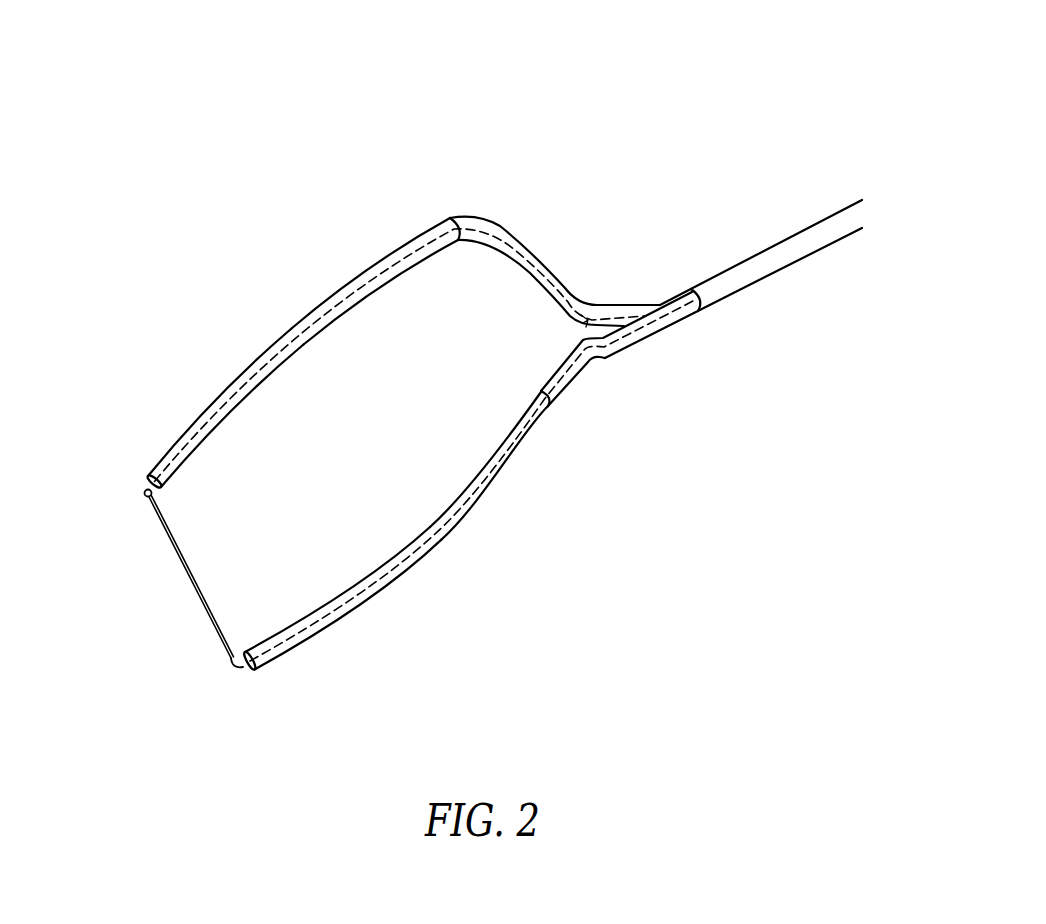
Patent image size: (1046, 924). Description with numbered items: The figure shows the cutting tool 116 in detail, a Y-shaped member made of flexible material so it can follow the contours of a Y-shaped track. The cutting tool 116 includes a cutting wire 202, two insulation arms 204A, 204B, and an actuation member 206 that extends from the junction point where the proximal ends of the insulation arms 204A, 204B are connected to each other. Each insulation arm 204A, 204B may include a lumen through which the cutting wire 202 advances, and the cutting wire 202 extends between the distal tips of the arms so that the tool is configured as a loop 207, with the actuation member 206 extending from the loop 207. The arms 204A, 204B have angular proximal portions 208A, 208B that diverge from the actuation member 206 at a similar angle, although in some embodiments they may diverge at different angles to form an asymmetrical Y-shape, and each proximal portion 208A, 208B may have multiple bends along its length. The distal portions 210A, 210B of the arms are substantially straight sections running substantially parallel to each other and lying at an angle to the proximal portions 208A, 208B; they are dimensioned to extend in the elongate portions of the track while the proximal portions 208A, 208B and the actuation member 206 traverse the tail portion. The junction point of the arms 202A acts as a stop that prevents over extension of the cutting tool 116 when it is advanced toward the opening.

The cutting tool 116 is at (448, 44).
The cutting wire 202 is at (308, 300).
The arm 202A is at (176, 589).
The insulation arm 204A is at (369, 255).
The insulation arm 204B is at (483, 504).
The actuation member 206 is at (771, 291).
The loop 207 is at (142, 458).
The angular proximal portion 208A is at (558, 268).
The angular proximal portion 208B is at (577, 378).
The distal portion 210A is at (214, 398).
The distal portion 210B is at (322, 635).